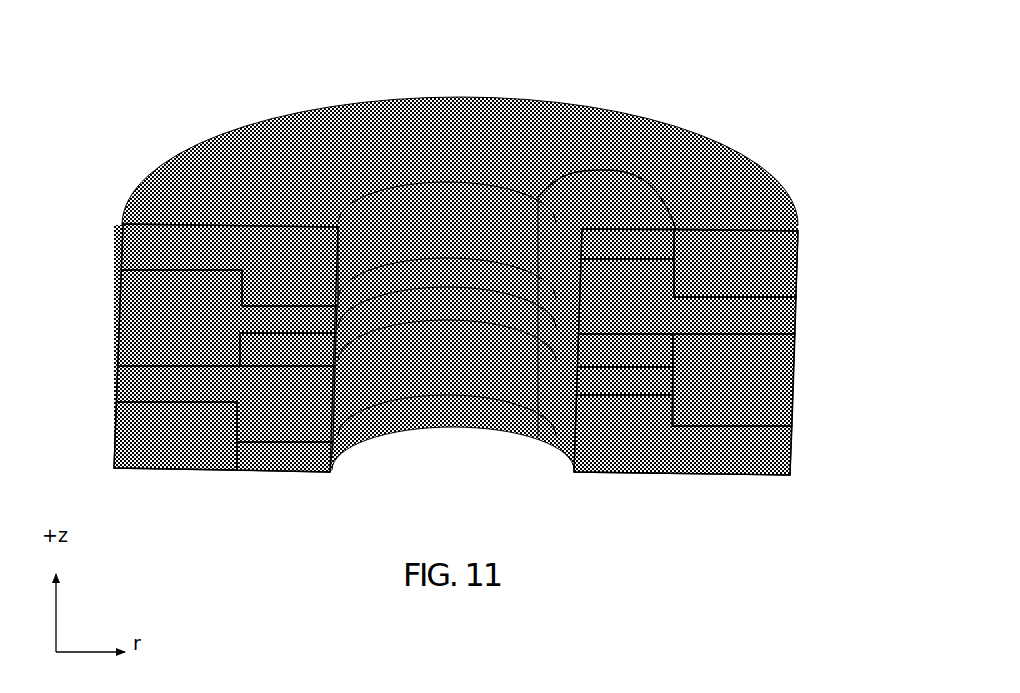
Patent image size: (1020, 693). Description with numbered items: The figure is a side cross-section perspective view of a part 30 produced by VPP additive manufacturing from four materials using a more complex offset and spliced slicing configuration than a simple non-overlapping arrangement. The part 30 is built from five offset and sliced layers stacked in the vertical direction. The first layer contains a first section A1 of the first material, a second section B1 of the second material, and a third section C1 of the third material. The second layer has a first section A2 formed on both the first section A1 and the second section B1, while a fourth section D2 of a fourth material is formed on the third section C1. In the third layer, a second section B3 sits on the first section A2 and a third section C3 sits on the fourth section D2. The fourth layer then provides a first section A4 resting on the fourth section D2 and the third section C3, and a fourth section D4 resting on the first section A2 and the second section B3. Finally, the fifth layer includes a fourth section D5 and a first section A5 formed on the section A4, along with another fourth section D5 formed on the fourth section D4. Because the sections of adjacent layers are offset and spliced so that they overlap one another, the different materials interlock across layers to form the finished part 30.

The part 30 is at (726, 59).
The first section A1 is at (615, 202).
The first section A2 is at (804, 317).
The first section A4 is at (98, 391).
The first section A5 is at (300, 464).
The second section B1 is at (804, 260).
The second section B3 is at (650, 349).
The third section C1 is at (106, 243).
The third section C3 is at (253, 346).
The fourth section D2 is at (100, 310).
The fourth section D4 is at (800, 392).
The fourth section D5 is at (98, 437).